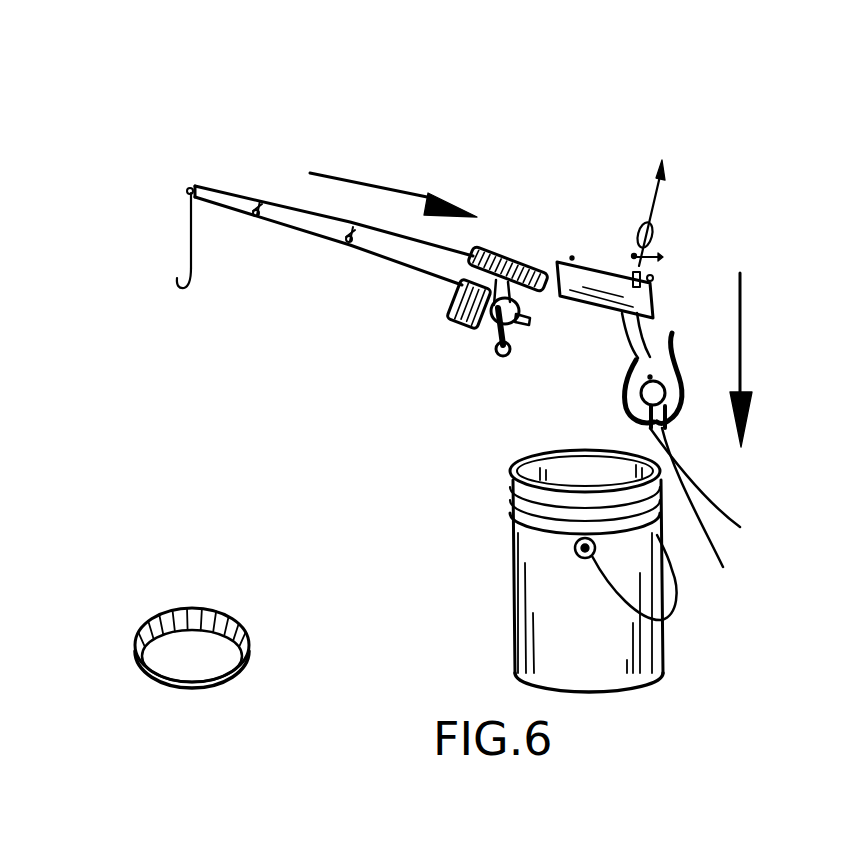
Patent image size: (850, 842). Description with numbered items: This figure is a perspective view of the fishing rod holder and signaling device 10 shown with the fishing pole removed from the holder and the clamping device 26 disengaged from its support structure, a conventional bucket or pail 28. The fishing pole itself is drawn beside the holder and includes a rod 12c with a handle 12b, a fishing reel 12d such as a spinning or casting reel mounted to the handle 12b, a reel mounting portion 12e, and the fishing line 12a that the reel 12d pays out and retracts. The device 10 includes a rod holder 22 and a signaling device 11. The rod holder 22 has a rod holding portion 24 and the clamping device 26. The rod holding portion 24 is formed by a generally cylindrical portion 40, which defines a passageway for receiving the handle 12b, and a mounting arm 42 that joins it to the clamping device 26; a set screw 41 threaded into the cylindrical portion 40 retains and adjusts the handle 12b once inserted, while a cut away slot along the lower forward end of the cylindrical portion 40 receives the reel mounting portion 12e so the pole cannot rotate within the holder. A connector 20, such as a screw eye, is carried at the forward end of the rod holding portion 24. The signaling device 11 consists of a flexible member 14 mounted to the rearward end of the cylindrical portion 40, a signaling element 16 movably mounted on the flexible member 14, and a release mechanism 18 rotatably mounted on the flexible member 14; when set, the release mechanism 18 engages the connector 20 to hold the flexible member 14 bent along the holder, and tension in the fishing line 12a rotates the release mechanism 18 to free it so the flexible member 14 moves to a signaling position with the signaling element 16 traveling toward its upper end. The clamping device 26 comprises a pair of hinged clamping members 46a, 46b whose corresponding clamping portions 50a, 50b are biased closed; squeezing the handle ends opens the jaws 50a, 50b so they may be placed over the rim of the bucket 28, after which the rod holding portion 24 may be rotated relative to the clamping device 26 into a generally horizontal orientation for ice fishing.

The fishing rod holder and signaling device 10 is at (448, 68).
The signaling device 11 is at (690, 198).
The fishing line 12a is at (190, 253).
The handle 12b is at (516, 256).
The rod 12c is at (293, 217).
The fishing reel 12d is at (487, 335).
The mounting portion of fishing reel 12e is at (528, 297).
The flexible member 14 is at (663, 192).
The signaling element 16 is at (656, 233).
The release mechanism 18 is at (637, 260).
The connector 20 is at (572, 257).
The rod holder 22 is at (685, 282).
The rod holding portion 24 is at (589, 245).
The clamping device 26 is at (703, 354).
The bucket 28 is at (648, 640).
The cylindrical portion 40 is at (602, 278).
The set screw 41 is at (667, 262).
The mounting arm 42 is at (623, 328).
The clamping member 46a is at (640, 378).
The clamping member 46b is at (678, 340).
The clamping portion 50a is at (717, 513).
The clamping portion 50b is at (722, 487).